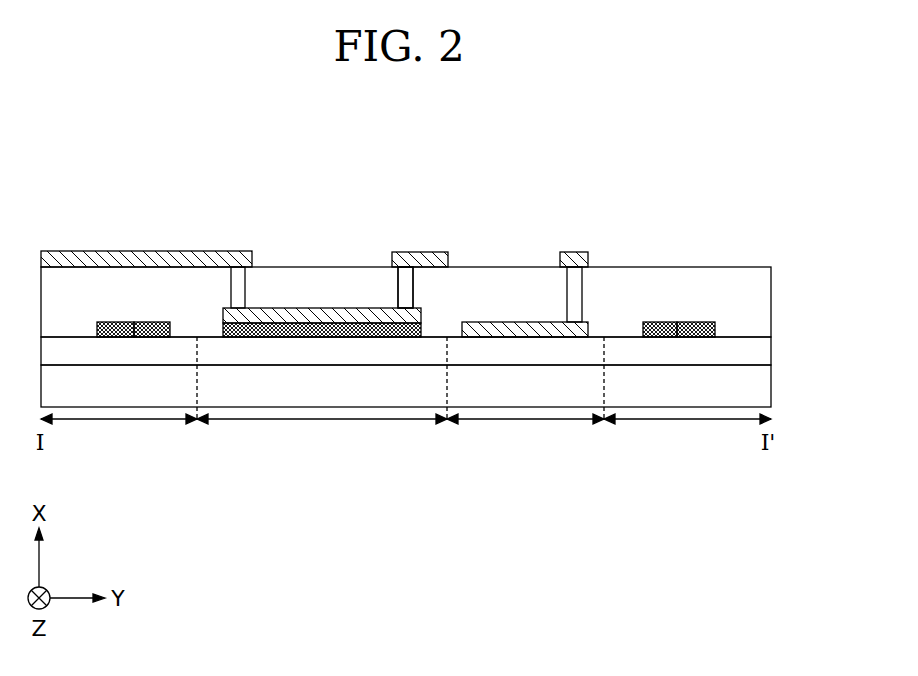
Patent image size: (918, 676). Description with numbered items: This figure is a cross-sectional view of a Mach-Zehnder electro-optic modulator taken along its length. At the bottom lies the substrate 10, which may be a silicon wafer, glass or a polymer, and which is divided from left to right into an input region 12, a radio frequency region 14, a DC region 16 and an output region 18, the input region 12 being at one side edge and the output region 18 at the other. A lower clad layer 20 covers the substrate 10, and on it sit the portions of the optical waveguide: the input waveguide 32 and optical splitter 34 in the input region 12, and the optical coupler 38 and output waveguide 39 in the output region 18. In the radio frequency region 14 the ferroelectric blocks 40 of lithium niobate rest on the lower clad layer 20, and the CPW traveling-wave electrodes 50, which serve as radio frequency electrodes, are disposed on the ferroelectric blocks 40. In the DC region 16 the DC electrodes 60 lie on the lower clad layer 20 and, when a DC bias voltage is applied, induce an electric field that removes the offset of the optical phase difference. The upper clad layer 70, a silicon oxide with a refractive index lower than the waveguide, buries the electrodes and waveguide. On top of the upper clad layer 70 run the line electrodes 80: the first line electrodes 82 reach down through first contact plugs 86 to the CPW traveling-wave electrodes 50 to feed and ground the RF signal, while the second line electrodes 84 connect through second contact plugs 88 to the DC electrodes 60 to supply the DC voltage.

The substrate 10 is at (757, 384).
The input region 12 is at (119, 433).
The radio frequency region 14 is at (322, 433).
The DC region 16 is at (525, 433).
The output region 18 is at (687, 433).
The lower clad layer 20 is at (757, 349).
The input waveguide 32 is at (112, 322).
The optical splitter 34 is at (152, 322).
The optical coupler 38 is at (655, 324).
The output waveguide 39 is at (695, 324).
The ferroelectric blocks 40 is at (297, 318).
The CPW traveling-wave electrodes 50 is at (338, 318).
The DC electrodes 60 is at (590, 333).
The upper clad layer 70 is at (757, 301).
The line electrodes 80 is at (200, 258).
The first line electrodes 82 is at (427, 261).
The second line electrodes 84 is at (575, 261).
The first contact plugs 86 is at (398, 288).
The second contact plugs 88 is at (578, 295).